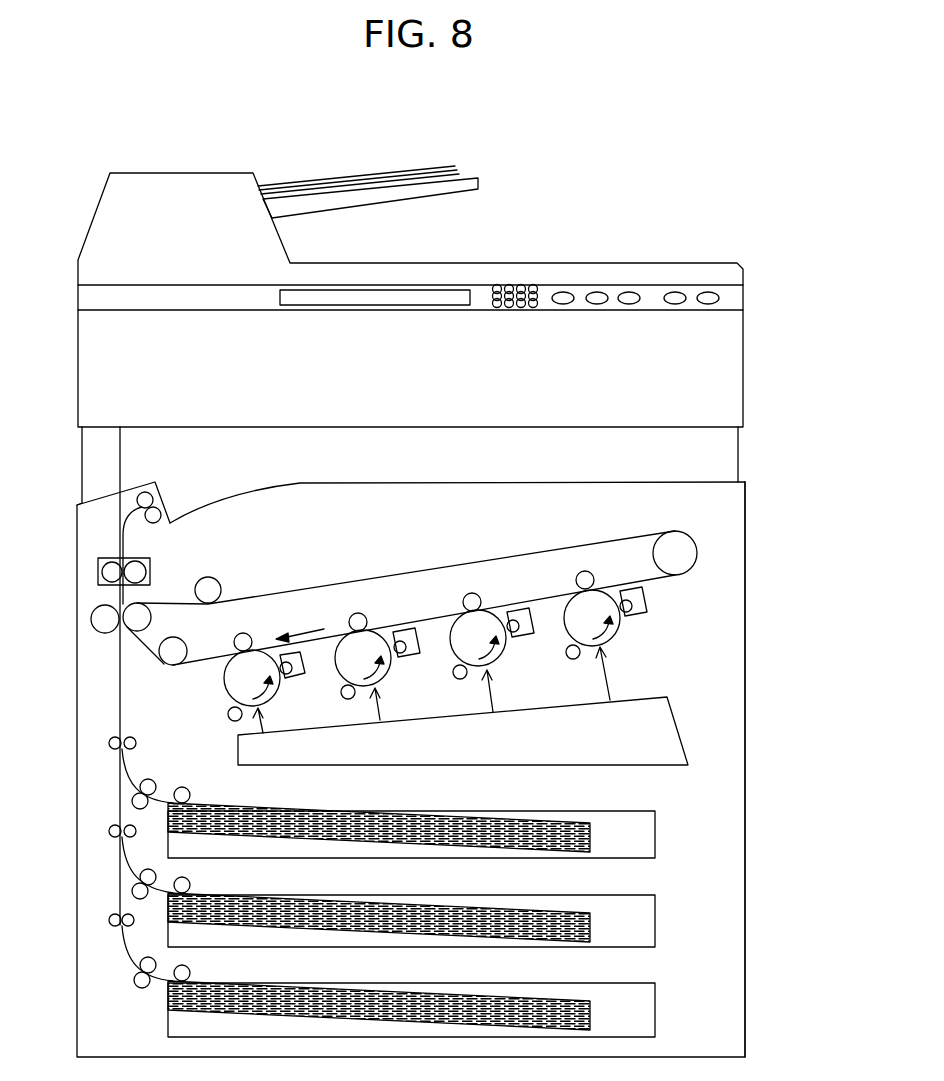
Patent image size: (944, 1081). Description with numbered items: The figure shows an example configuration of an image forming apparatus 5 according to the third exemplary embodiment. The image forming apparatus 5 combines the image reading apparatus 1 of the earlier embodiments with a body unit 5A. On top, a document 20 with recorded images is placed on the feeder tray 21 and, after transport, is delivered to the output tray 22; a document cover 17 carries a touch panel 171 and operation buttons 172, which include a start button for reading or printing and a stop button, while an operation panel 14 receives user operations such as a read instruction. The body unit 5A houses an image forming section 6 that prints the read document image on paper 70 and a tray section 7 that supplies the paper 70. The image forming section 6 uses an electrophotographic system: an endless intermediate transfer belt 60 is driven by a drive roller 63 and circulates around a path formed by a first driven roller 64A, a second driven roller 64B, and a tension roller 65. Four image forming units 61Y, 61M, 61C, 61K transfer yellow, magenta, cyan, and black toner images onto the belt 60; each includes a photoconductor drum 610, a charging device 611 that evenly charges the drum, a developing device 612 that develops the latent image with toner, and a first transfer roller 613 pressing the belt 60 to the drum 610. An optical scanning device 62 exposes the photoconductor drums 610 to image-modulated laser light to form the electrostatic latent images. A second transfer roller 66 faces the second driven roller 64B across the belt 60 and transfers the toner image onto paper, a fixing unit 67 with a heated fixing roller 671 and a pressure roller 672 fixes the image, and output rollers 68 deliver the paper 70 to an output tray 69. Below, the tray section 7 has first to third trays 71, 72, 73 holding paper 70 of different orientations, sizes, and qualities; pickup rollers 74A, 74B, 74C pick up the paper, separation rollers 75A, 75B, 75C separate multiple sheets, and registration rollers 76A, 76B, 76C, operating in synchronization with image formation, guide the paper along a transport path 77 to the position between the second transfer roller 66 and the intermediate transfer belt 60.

The image reading apparatus 1 is at (660, 168).
The image forming apparatus 5 is at (634, 68).
The body unit 5A is at (746, 500).
The image forming section 6 is at (724, 552).
The tray section 7 is at (729, 792).
The operation panel 14 is at (744, 291).
The document cover 17 is at (698, 262).
The touch panel 171 is at (430, 289).
The operation buttons 172 is at (629, 290).
The document 20 is at (378, 172).
The feeder tray 21 is at (472, 178).
The output tray 22 is at (516, 262).
The intermediate transfer belt 60 is at (500, 558).
The fourth image forming unit 61K is at (243, 627).
The third image forming unit 61C is at (353, 607).
The second image forming unit 61M is at (463, 587).
The first image forming unit 61Y is at (607, 599).
The photoconductor drum 610 is at (571, 604).
The charging device 611 is at (575, 659).
The developing device 612 is at (647, 603).
The first transfer roller 613 is at (592, 574).
The optical scanning device 62 is at (676, 726).
The drive roller 63 is at (682, 537).
The first driven roller 64A is at (203, 577).
The second driven roller 64B is at (152, 618).
The tension roller 65 is at (173, 666).
The second transfer roller 66 is at (91, 619).
The fixing unit 67 is at (95, 554).
The fixing roller 671 is at (112, 562).
The pressure roller 672 is at (135, 561).
The output rollers 68 is at (156, 498).
The output tray 69 is at (333, 483).
The paper 70 is at (328, 808).
The first tray 71 is at (656, 820).
The second tray 72 is at (656, 908).
The third tray 73 is at (656, 996).
The pickup roller 74A is at (190, 794).
The pickup roller 74B is at (190, 884).
The pickup roller 74C is at (190, 972).
The separation roller 75A is at (62, 785).
The separation roller 75B is at (132, 884).
The separation roller 75C is at (142, 989).
The registration roller 76A is at (148, 742).
The registration roller 76B is at (109, 831).
The registration roller 76C is at (109, 920).
The transport path 77 is at (122, 662).